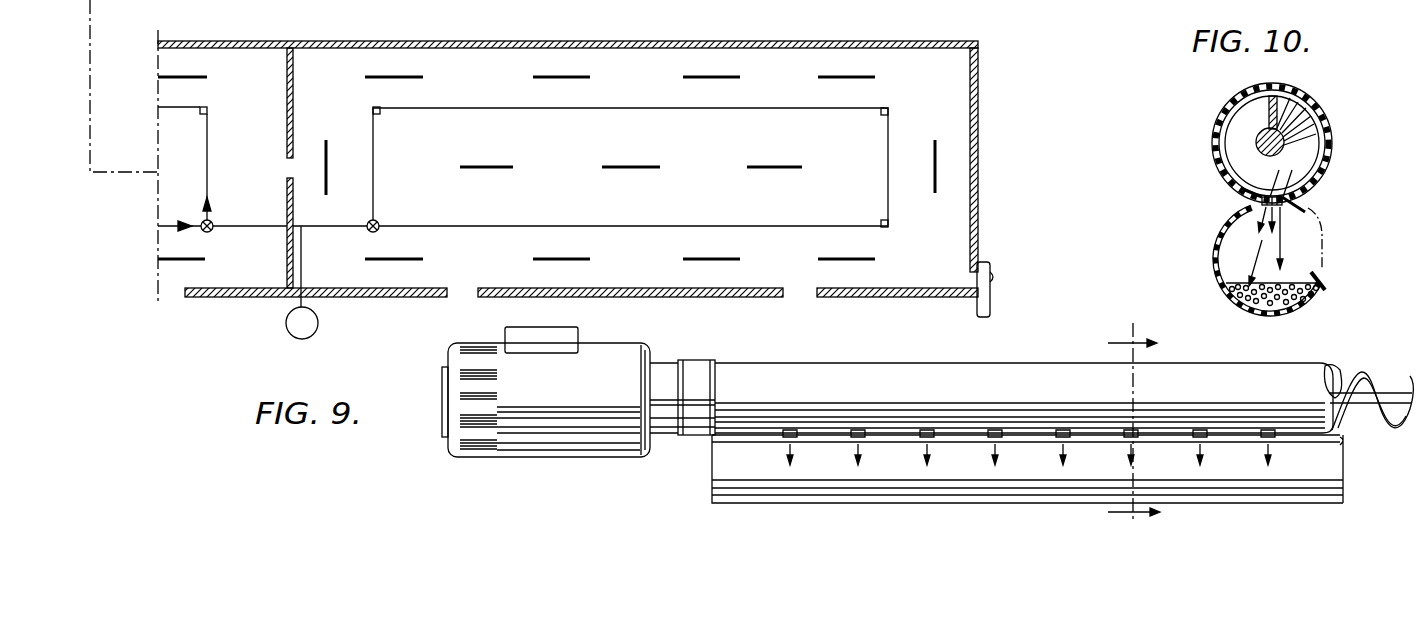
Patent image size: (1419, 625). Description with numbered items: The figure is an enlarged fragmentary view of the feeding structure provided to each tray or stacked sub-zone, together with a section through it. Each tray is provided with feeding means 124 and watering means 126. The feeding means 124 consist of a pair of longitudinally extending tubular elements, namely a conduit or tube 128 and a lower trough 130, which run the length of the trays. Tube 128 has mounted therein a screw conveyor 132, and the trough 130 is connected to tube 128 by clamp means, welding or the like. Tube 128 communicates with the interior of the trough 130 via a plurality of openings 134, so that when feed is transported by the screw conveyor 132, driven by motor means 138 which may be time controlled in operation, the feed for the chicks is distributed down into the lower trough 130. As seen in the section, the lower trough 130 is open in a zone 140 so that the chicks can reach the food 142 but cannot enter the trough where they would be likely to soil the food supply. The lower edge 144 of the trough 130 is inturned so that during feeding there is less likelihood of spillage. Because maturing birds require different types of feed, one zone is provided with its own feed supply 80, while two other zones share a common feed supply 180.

In FIG. 9, the feed supply 80 is at (341, 109).
In FIG. 9, the feeding means 124 is at (209, 137).
In FIG. 10, the feeding means 124 is at (1204, 180).
In FIG. 9, the watering means 126 is at (700, 137).
In FIG. 9, the tube 128 is at (1008, 378).
In FIG. 10, the tube 128 is at (1333, 145).
In FIG. 9, the lower trough 130 is at (1322, 465).
In FIG. 10, the lower trough 130 is at (1303, 300).
In FIG. 9, the screw conveyor 132 is at (1362, 374).
In FIG. 10, the screw conveyor 132 is at (1298, 149).
In FIG. 9, the openings 134 is at (1029, 447).
In FIG. 10, the openings 134 is at (1237, 190).
In FIG. 9, the motor means 138 is at (630, 356).
In FIG. 10, the open zone 140 is at (1322, 243).
In FIG. 10, the food 142 is at (1223, 285).
In FIG. 10, the lower edge 144 is at (1330, 271).
In FIG. 9, the common feed supply 180 is at (308, 333).